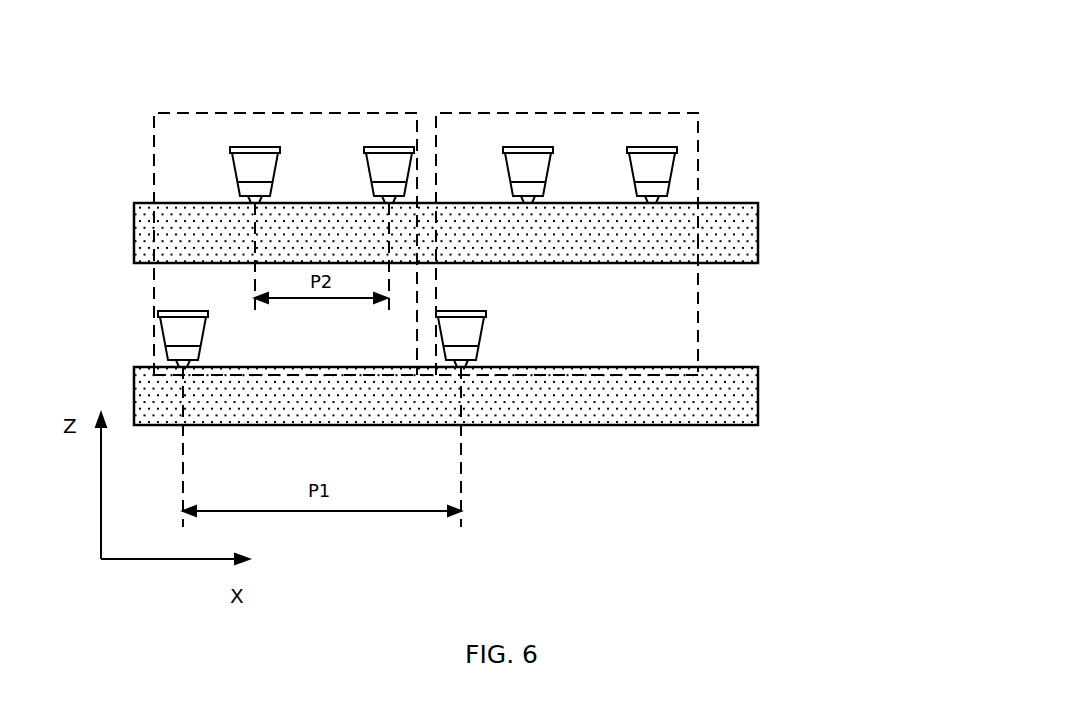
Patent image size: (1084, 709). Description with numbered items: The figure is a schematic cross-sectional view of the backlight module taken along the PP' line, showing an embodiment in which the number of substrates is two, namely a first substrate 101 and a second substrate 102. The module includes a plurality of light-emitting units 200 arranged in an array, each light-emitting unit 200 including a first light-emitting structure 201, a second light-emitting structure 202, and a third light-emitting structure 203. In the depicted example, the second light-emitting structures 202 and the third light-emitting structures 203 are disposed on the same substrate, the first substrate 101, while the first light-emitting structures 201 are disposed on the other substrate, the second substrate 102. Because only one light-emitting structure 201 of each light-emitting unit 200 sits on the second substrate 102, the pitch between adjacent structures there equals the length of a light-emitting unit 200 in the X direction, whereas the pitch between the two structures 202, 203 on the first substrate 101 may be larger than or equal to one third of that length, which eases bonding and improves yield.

The first substrate 101 is at (758, 233).
The second substrate 102 is at (758, 400).
The light-emitting unit 200 is at (323, 110).
The first light-emitting structure 201 is at (167, 328).
The second light-emitting structure 202 is at (249, 149).
The third light-emitting structure 203 is at (378, 149).